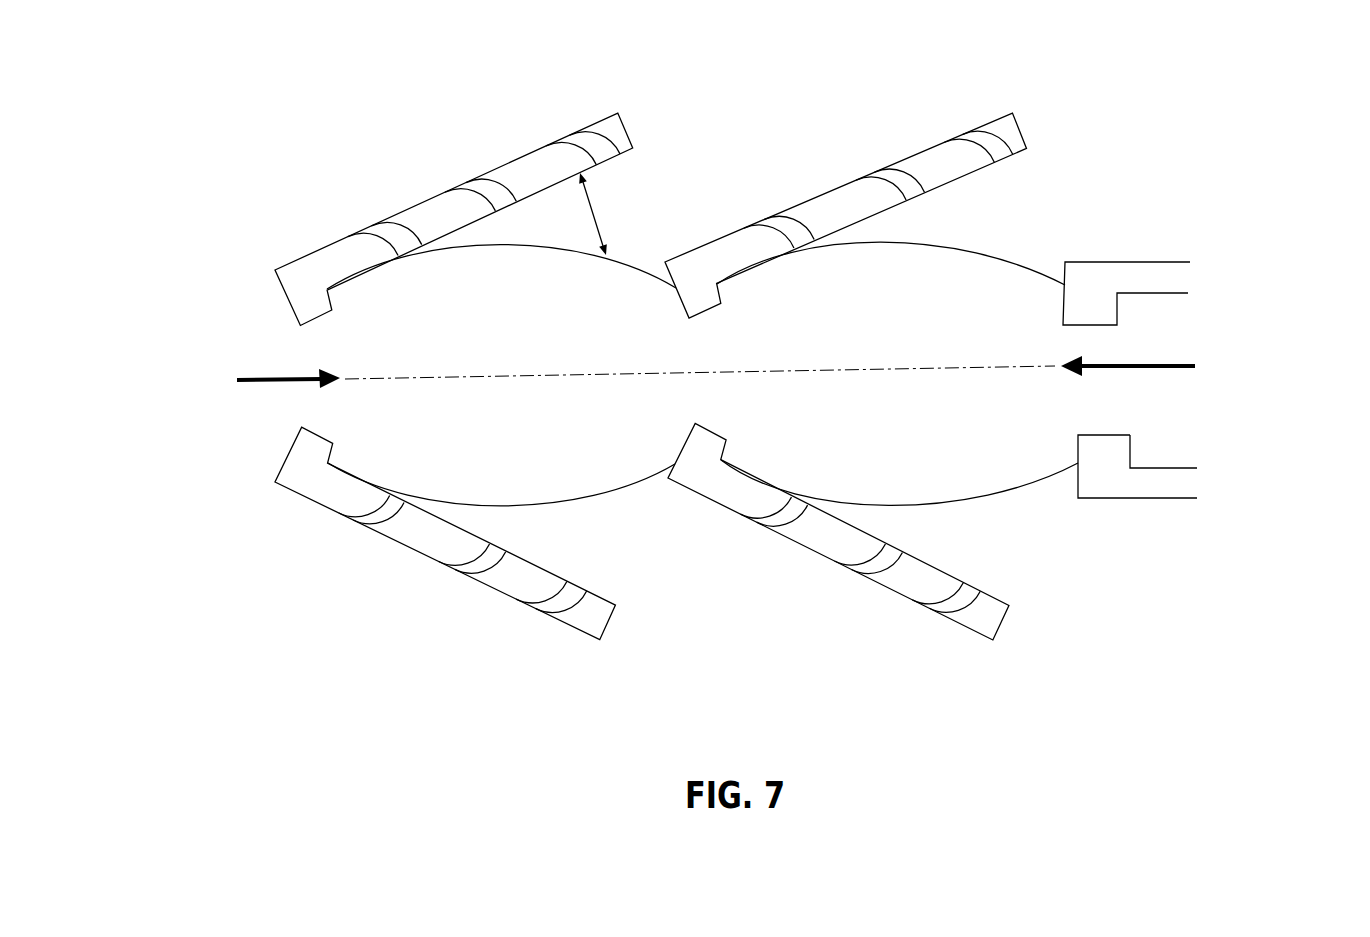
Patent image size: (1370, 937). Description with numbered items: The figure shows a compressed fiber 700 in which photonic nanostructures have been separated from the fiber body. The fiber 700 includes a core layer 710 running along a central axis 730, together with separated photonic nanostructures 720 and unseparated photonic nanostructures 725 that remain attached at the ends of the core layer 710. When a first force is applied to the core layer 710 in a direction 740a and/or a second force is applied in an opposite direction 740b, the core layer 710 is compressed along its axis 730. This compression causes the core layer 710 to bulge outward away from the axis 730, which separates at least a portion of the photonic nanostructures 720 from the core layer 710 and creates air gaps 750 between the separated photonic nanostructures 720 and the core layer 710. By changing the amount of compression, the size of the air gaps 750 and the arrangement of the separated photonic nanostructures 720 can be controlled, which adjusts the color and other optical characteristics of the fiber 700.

The compressed fiber 700 is at (322, 669).
The core layer 710 is at (988, 467).
The separated photonic nanostructures 720 is at (503, 164).
The unseparated photonic nanostructures 725 is at (1173, 498).
The axis 730 is at (937, 362).
The direction of first force 740a is at (262, 378).
The direction of second force 740b is at (1178, 364).
The air gaps 750 is at (593, 211).